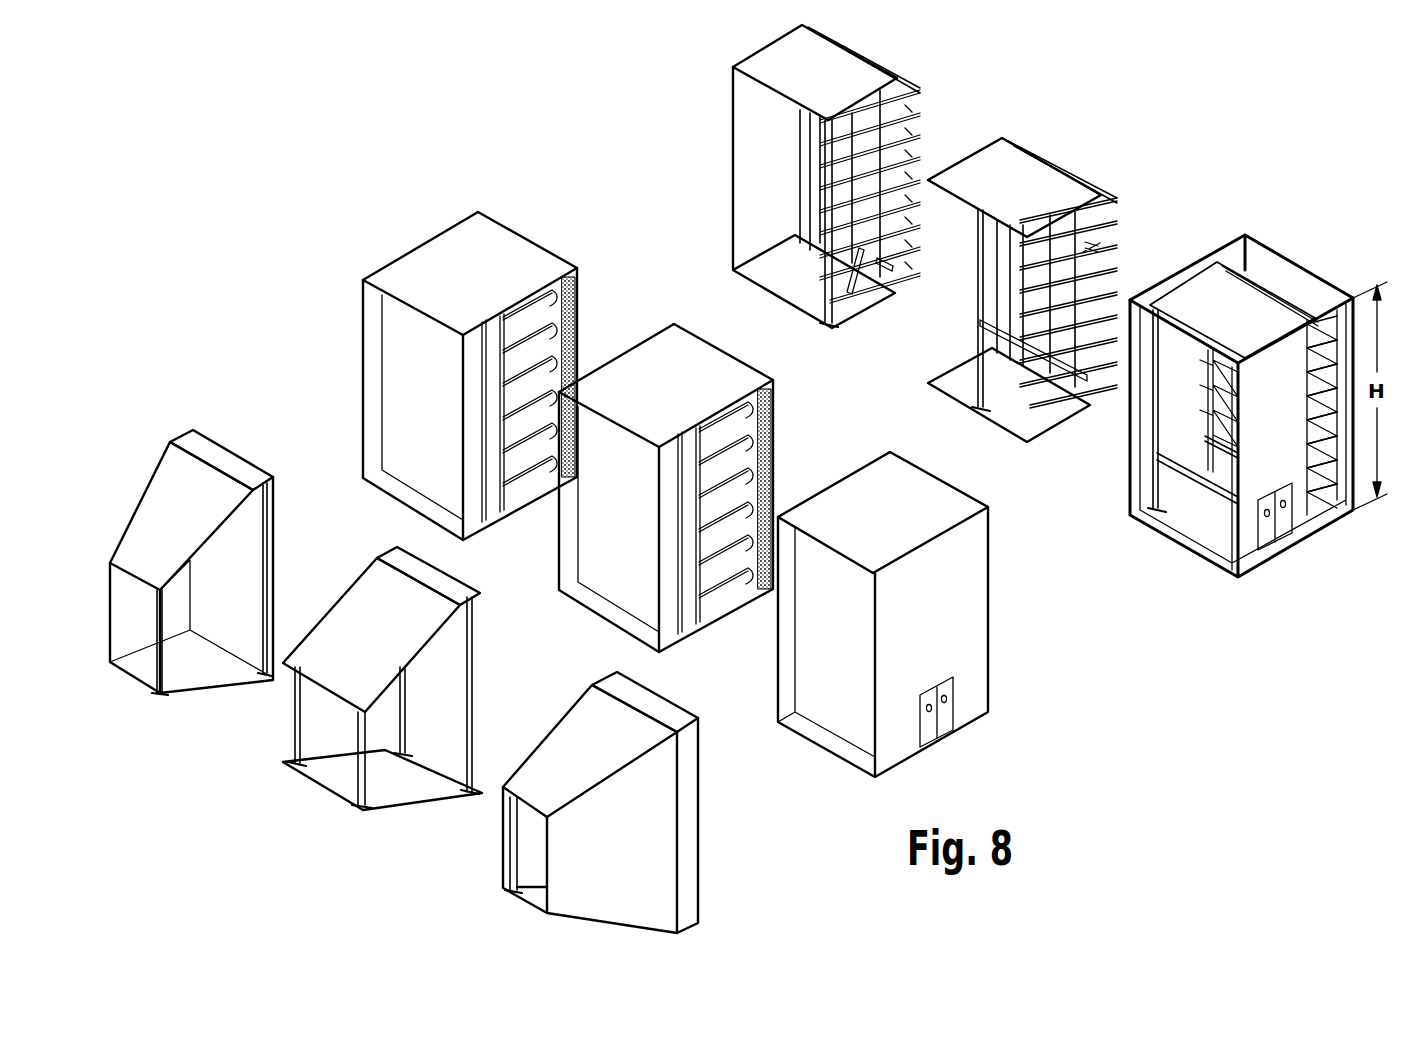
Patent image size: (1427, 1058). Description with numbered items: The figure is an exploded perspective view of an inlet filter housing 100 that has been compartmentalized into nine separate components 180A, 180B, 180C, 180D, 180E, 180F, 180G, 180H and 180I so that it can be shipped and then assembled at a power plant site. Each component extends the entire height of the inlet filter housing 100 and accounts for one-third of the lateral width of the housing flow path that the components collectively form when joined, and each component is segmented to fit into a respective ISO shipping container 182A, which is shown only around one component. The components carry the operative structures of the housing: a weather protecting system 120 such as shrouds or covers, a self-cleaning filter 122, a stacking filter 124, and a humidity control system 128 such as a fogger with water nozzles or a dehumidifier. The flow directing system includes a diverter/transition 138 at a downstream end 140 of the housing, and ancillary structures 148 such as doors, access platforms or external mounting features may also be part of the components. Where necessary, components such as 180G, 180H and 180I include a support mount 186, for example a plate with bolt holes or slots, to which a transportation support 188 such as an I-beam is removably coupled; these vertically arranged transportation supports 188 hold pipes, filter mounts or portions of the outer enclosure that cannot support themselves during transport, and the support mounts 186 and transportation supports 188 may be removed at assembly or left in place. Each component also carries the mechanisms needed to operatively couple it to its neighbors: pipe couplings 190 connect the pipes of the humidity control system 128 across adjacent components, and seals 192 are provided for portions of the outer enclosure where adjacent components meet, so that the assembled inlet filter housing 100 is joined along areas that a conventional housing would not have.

The inlet filter housing 100 is at (1267, 359).
The weather protecting system 120 is at (912, 83).
The self-cleaning filter 122 is at (782, 480).
The stacking filter 124 is at (772, 417).
The humidity control system 128 is at (1087, 250).
The diverter/transition 138 is at (658, 764).
The downstream end 140 is at (650, 815).
The ancillary structures 148 is at (1263, 533).
The component 180A is at (1267, 398).
The component 180B is at (1078, 145).
The component 180C is at (900, 50).
The component 180D is at (995, 742).
The component 180E is at (698, 456).
The component 180F is at (444, 212).
The component 180G is at (658, 802).
The component 180H is at (465, 568).
The component 180I is at (246, 438).
The ISO shipping container 182A is at (1303, 260).
The support mount 186 is at (267, 667).
The transportation support 188 is at (267, 593).
The pipe coupling 190 is at (1030, 377).
The seal 192 is at (1060, 213).